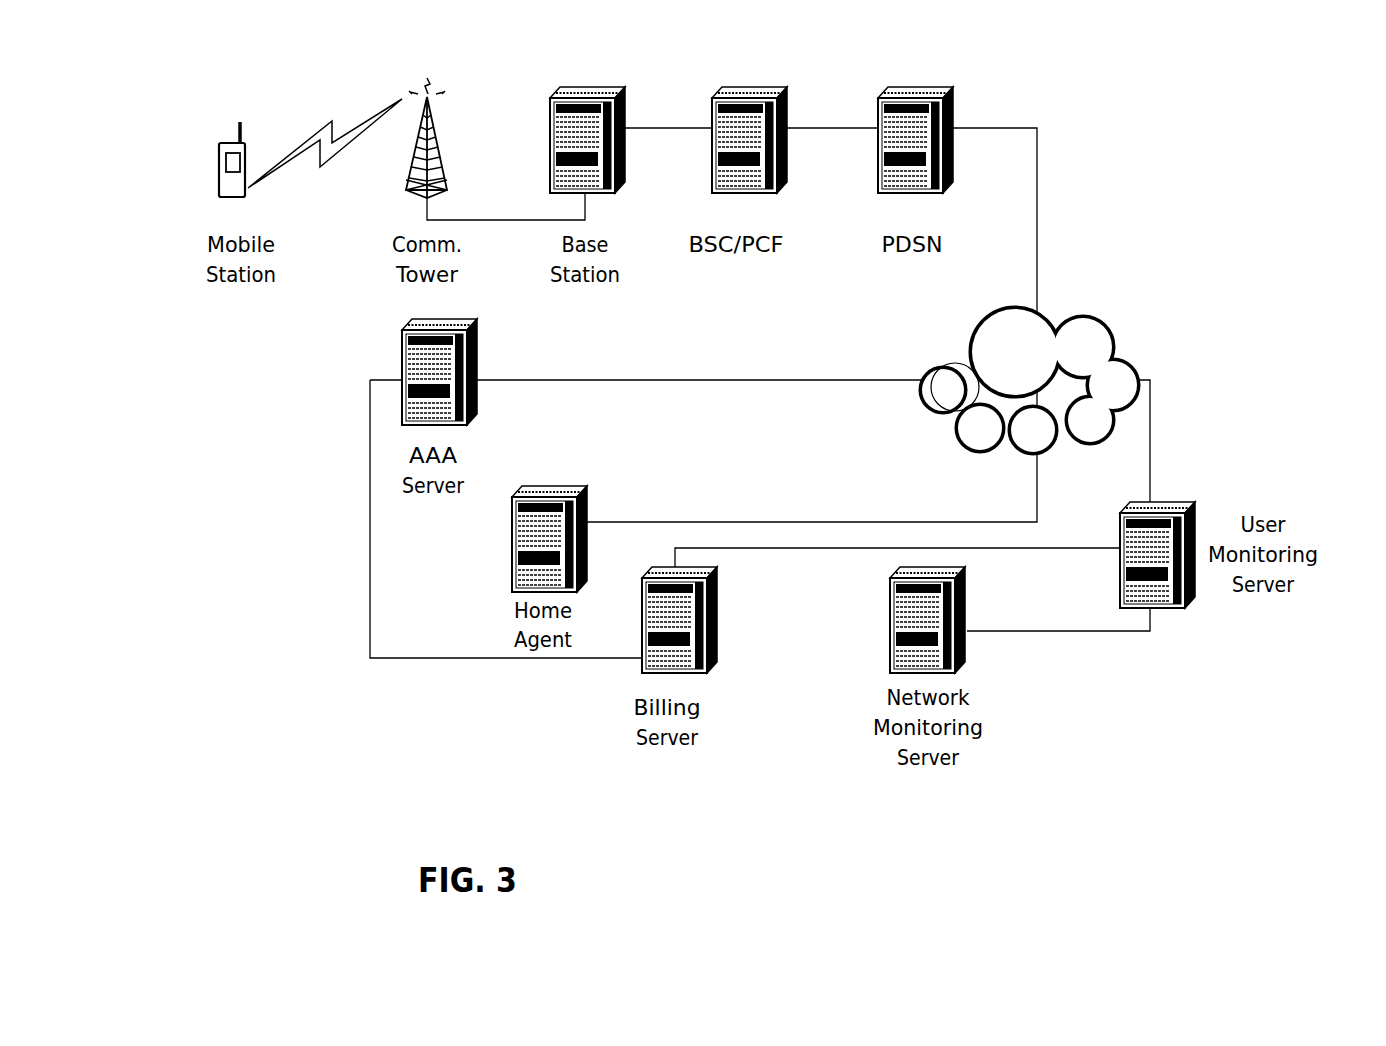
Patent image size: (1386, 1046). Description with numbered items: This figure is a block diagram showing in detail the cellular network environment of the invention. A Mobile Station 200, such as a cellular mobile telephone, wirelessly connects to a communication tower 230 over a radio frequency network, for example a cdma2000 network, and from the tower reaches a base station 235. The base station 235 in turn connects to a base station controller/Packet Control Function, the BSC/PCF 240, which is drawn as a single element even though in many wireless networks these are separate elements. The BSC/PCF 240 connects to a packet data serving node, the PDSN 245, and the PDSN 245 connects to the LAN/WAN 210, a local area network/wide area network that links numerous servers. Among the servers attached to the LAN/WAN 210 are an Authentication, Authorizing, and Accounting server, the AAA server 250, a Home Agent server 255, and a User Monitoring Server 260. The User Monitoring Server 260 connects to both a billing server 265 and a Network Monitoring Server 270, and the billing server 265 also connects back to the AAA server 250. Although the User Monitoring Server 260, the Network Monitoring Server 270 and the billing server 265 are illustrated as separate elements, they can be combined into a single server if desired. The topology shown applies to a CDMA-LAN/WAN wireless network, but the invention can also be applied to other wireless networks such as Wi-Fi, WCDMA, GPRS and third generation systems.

The mobile station 200 is at (248, 142).
The LAN/WAN 210 is at (1105, 323).
The communication tower 230 is at (440, 145).
The base station 235 is at (623, 88).
The BSC/PCF 240 is at (770, 88).
The PDSN 245 is at (938, 88).
The AAA server 250 is at (477, 331).
The Home Agent server 255 is at (590, 500).
The User Monitoring Server 260 is at (1169, 502).
The billing server 265 is at (721, 583).
The Network Monitoring Server 270 is at (969, 581).